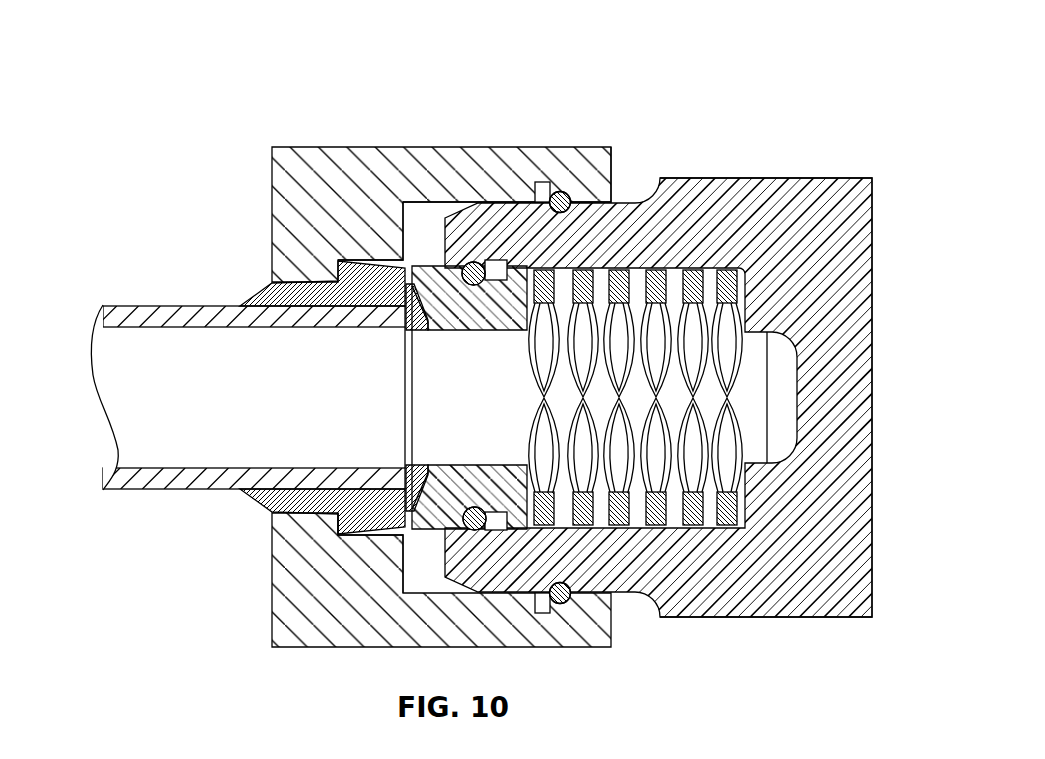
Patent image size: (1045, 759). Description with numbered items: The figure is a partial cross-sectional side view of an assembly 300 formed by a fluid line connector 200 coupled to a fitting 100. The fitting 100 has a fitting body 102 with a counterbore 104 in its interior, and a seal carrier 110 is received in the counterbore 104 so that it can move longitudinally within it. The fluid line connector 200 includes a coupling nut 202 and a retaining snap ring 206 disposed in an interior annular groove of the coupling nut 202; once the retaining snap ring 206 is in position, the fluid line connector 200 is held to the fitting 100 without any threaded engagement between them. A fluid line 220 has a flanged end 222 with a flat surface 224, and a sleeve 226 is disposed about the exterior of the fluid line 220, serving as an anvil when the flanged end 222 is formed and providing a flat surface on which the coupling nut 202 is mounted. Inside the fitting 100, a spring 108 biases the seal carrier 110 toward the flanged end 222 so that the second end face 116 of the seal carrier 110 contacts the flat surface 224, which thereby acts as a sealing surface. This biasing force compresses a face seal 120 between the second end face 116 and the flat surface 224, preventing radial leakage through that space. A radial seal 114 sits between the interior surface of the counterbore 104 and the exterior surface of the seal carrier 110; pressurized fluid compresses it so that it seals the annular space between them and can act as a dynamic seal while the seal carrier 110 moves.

The assembly 300 is at (126, 86).
The fluid line connector 200 is at (288, 123).
The coupling nut 202 is at (603, 148).
The flanged end 222 is at (339, 258).
The second end face 116 is at (338, 537).
The fitting 100 is at (864, 154).
The fitting body 102 is at (817, 177).
The seal carrier 110 is at (432, 288).
The face seal 120 is at (420, 266).
The flat surface 224 is at (415, 478).
The fluid line 220 is at (115, 305).
The sleeve 226 is at (259, 284).
The spring 108 is at (657, 269).
The counterbore 104 is at (702, 270).
The radial seal 114 is at (554, 196).
The retaining snap ring 206 is at (483, 286).